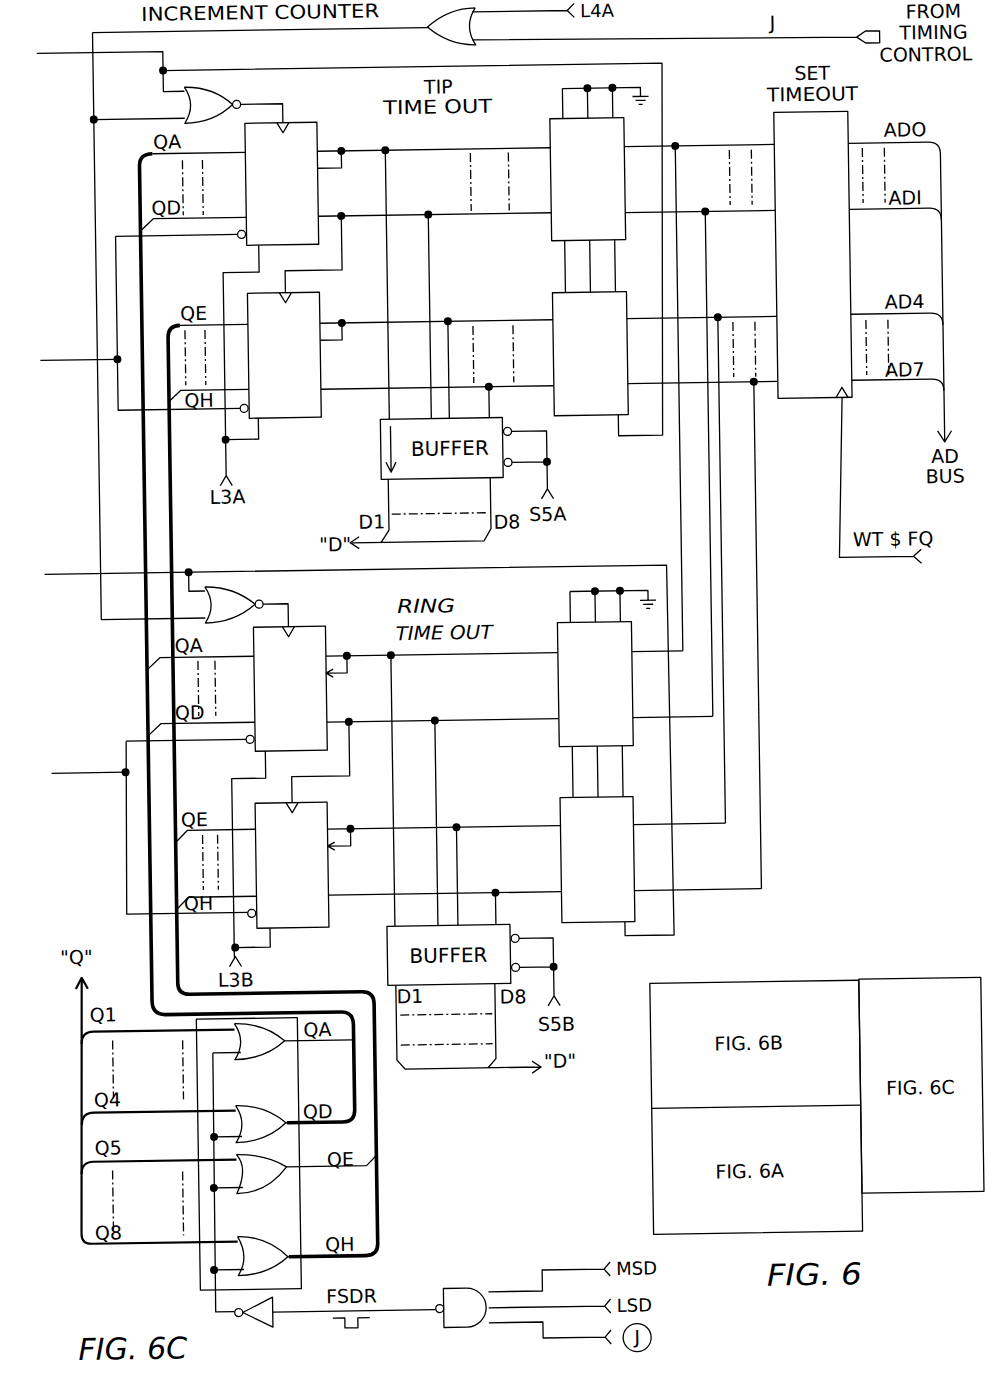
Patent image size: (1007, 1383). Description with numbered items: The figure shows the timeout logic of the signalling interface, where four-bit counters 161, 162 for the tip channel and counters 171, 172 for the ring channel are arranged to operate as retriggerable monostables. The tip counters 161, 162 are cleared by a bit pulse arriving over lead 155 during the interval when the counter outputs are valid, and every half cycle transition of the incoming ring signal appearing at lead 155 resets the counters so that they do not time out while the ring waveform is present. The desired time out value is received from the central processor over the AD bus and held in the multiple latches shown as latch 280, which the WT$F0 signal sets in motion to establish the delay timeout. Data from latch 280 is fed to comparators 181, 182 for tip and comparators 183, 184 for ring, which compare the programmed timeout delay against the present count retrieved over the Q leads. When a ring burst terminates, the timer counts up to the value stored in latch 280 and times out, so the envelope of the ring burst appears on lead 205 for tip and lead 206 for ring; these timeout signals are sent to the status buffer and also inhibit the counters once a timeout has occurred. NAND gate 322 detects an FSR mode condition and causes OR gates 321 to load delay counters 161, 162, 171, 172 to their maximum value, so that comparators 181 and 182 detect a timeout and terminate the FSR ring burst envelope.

In FIG. 6, the lead 155 is at (68, 368).
In FIG. 6, the counter 161 is at (323, 205).
In FIG. 6, the counter 162 is at (325, 307).
In FIG. 6, the counter 171 is at (309, 629).
In FIG. 6, the counter 172 is at (321, 825).
In FIG. 6, the comparator 181 is at (638, 142).
In FIG. 6, the comparator 182 is at (545, 304).
In FIG. 6, the comparator 183 is at (545, 640).
In FIG. 6, the comparator 184 is at (547, 817).
In FIG. 6, the lead 205 is at (333, 70).
In FIG. 6, the lead 206 is at (578, 566).
In FIG. 6, the latch 280 is at (844, 405).
In FIG. 6C, the OR gates 321 is at (284, 1229).
In FIG. 6C, the NAND gate 322 is at (439, 1288).